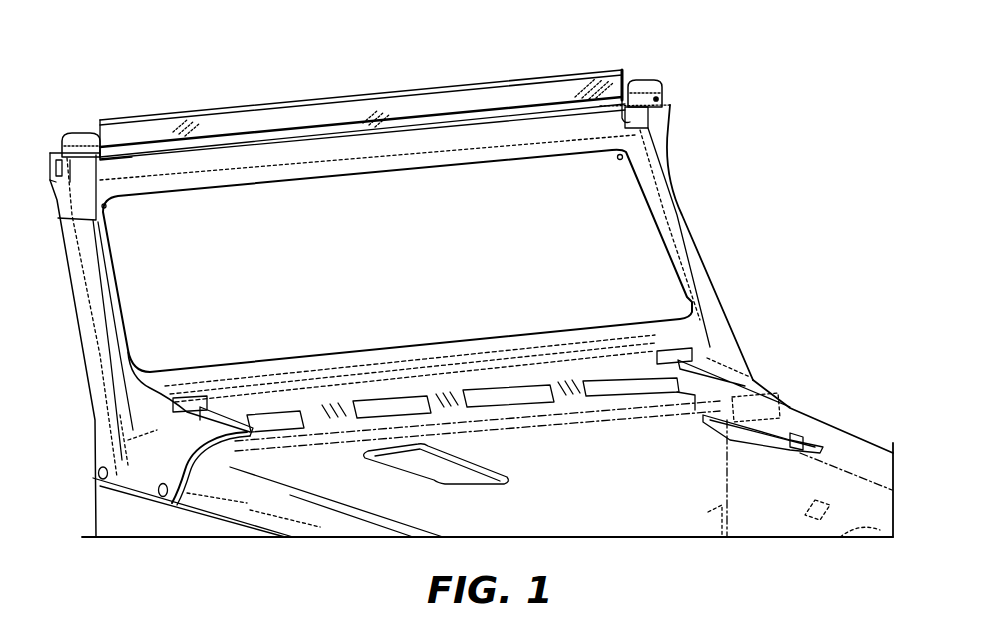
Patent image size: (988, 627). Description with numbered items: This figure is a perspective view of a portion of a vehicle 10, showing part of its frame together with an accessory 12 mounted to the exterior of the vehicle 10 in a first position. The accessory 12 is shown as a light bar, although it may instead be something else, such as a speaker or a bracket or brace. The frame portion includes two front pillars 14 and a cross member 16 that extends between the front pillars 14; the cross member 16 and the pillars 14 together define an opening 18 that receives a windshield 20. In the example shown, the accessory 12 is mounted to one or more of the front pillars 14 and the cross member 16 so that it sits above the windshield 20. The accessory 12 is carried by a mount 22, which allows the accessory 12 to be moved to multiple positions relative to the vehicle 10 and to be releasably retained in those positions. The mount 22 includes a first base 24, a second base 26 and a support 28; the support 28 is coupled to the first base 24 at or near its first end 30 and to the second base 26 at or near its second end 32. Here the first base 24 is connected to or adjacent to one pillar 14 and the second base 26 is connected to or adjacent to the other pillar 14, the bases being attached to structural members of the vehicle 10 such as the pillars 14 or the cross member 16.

The vehicle 10 is at (722, 163).
The accessory 12 is at (530, 58).
The front pillars 14 is at (688, 232).
The cross member 16 is at (255, 156).
The opening 18 is at (122, 308).
The windshield 20 is at (650, 275).
The mount 22 is at (670, 78).
The first base 24 is at (65, 115).
The second base 26 is at (642, 68).
The support 28 is at (128, 152).
The first end 30 is at (60, 147).
The second end 32 is at (656, 96).